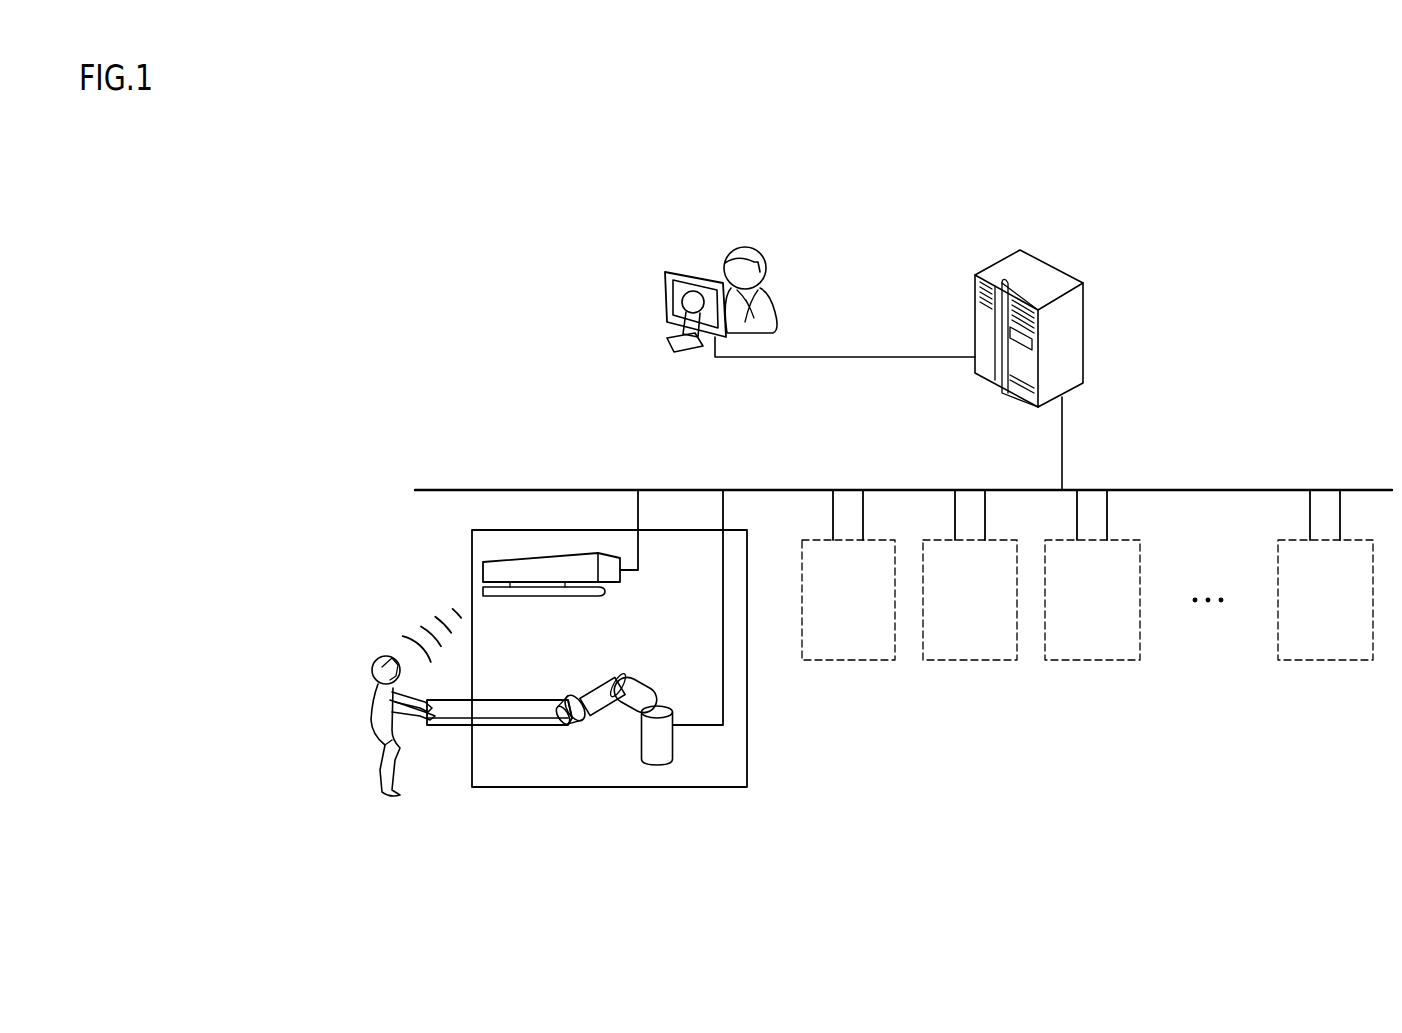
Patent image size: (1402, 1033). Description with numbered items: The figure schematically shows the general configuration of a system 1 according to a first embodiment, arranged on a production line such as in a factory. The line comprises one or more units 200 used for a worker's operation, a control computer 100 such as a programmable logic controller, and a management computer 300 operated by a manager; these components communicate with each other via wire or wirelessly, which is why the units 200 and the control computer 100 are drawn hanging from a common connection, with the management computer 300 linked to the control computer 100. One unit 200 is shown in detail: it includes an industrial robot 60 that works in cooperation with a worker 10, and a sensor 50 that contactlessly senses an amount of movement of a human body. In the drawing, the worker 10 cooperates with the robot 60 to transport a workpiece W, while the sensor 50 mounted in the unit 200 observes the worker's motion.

The system 1 is at (653, 206).
The worker 10 is at (372, 667).
The sensor 50 is at (610, 583).
The industrial robot 60 is at (635, 692).
The control computer 100 is at (1087, 318).
The unit 200 is at (500, 787).
The management computer 300 is at (665, 293).
The workpiece W is at (513, 700).